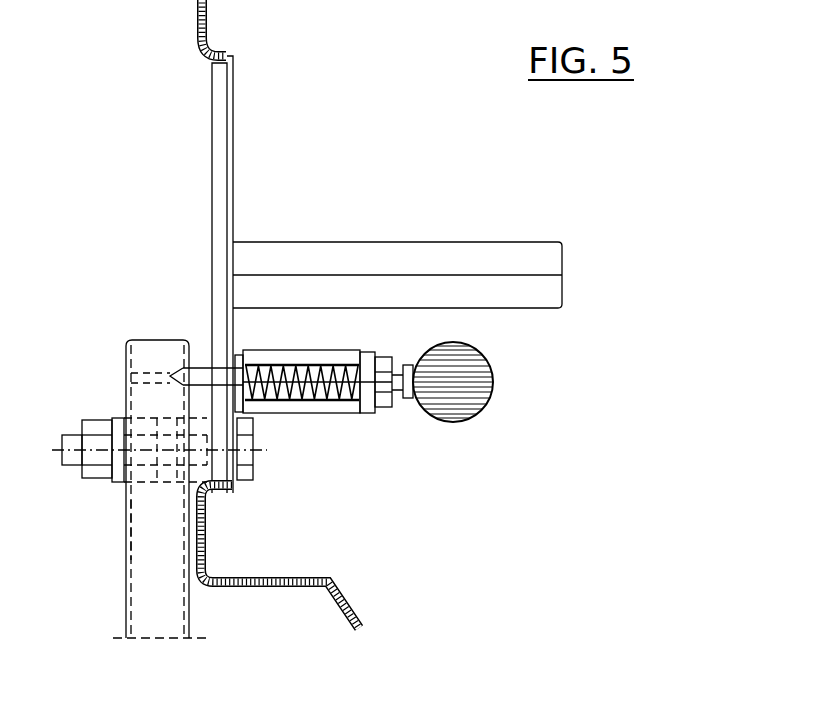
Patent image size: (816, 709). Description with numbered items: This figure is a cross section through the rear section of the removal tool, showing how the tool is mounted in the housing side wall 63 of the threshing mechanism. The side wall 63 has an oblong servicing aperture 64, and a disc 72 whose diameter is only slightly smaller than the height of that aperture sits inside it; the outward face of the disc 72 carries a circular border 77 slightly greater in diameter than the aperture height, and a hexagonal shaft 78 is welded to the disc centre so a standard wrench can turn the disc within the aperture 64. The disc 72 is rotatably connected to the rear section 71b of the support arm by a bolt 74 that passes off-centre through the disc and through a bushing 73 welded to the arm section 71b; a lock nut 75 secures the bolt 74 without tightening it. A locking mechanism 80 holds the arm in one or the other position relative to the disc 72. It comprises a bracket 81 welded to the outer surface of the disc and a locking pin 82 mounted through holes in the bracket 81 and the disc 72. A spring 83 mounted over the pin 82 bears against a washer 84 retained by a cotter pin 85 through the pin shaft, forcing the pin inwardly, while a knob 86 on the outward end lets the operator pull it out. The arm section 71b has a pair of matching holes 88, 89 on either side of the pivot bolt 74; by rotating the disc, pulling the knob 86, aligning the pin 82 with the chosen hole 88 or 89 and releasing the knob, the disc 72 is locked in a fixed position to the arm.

The side wall 63 is at (208, 21).
The servicing aperture 64 is at (146, 106).
The disc 72 is at (218, 175).
The circular border 77 is at (233, 90).
The hexagonal shaft 78 is at (538, 305).
The rear section of the support arm 71b is at (128, 596).
The hole 88 is at (178, 535).
The bushing 73 is at (118, 484).
The lock nut 75 is at (100, 420).
The bolt 74 is at (258, 468).
The hole 89 is at (131, 371).
The locking pin 82 is at (203, 366).
The cotter pin 85 is at (265, 415).
The washer 84 is at (305, 412).
The spring 83 is at (355, 410).
The bracket 81 is at (390, 416).
The knob 86 is at (490, 405).
The locking mechanism 80 is at (510, 446).